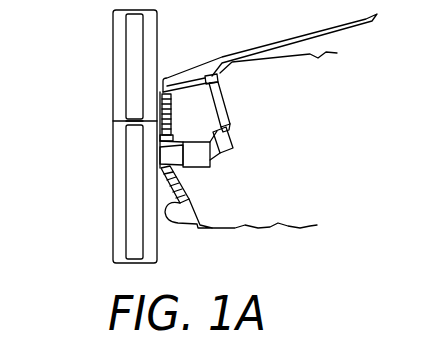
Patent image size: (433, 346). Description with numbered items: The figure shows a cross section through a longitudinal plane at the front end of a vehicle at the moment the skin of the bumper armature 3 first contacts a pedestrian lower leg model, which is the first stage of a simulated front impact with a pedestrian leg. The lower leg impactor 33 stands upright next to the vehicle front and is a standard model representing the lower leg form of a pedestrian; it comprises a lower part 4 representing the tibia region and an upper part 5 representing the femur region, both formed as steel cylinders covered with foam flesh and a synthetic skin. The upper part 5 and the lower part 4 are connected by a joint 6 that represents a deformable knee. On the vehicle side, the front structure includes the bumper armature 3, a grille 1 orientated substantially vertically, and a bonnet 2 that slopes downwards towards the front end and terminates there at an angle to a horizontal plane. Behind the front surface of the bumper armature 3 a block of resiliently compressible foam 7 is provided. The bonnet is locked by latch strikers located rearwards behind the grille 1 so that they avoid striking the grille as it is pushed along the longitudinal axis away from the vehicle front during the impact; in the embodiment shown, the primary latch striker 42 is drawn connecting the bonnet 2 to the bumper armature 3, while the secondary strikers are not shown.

The lower leg impactor 33 is at (58, 9).
The upper part 5 is at (113, 27).
The joint 6 is at (113, 122).
The lower part 4 is at (113, 245).
The bonnet 2 is at (217, 59).
The primary latch striker 42 is at (220, 96).
The grille 1 is at (171, 111).
The resiliently compressible foam 7 is at (178, 148).
The bumper armature 3 is at (161, 164).